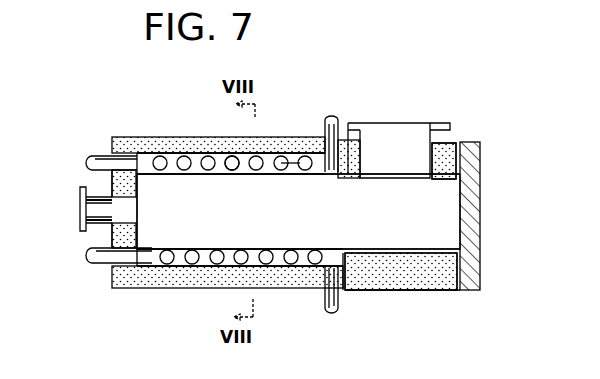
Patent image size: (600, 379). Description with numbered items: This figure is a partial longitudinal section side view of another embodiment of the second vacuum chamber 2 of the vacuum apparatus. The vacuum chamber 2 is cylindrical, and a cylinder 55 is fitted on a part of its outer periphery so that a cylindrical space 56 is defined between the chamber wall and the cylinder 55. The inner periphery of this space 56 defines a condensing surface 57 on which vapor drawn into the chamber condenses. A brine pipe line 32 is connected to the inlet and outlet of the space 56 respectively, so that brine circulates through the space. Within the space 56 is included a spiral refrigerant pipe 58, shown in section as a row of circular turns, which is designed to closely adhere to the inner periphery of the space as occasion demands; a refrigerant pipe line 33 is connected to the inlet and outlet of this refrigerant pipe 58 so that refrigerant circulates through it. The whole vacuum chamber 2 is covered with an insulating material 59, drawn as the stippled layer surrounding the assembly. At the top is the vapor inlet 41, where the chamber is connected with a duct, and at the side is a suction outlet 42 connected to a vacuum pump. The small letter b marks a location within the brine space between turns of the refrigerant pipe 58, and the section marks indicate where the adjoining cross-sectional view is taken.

The vacuum chamber 2 is at (372, 237).
The brine pipe line 32 is at (98, 157).
The refrigerant pipe line 33 is at (95, 264).
The vapor inlet 41 is at (413, 137).
The suction outlet 42 is at (80, 207).
The cylinder 55 is at (233, 157).
The cylindrical space 56 is at (197, 160).
The condensing surface 57 is at (197, 174).
The spiral refrigerant pipe 58 is at (160, 158).
The insulating material 59 is at (435, 273).
The gap b is at (293, 162).